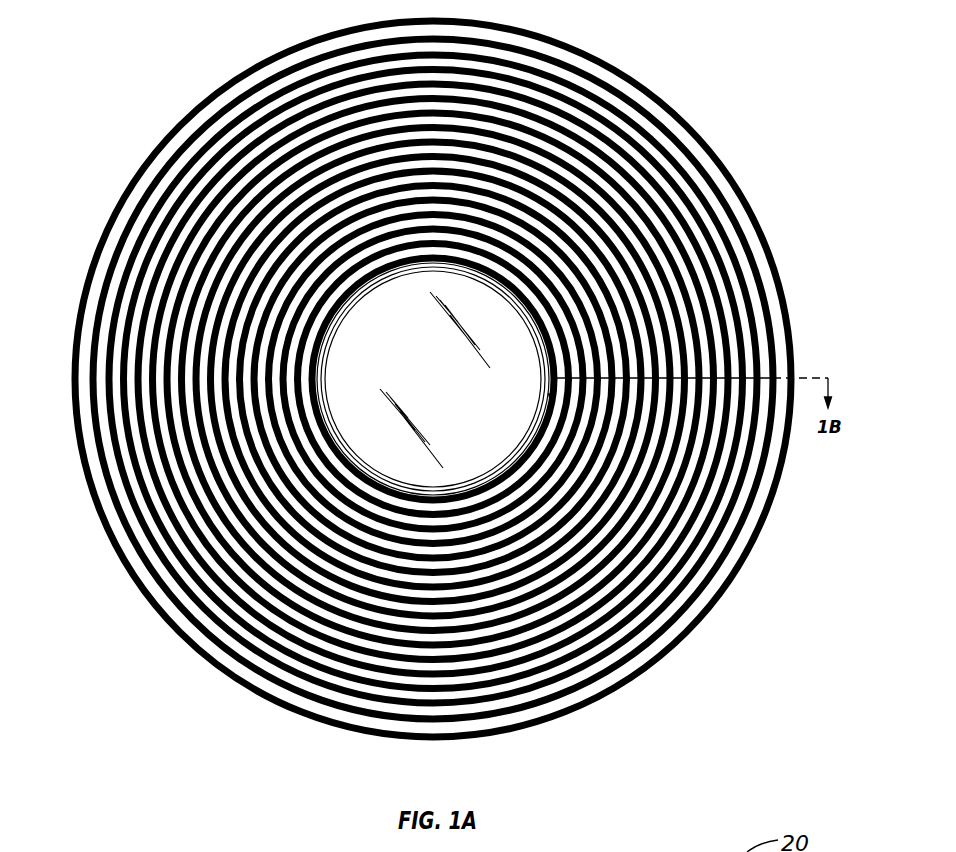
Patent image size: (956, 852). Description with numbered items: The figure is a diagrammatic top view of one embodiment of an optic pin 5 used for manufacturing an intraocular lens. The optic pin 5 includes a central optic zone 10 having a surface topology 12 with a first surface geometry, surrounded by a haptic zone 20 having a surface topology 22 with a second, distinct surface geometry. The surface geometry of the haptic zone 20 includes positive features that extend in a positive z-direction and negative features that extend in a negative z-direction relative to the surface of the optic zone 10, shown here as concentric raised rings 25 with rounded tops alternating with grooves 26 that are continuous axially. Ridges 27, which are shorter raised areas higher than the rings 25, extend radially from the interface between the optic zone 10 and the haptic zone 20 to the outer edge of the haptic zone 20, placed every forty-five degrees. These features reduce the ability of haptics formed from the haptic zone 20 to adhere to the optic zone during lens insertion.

The optic pin 5 is at (457, 377).
The optic zone 10 is at (503, 326).
The surface topology 12 is at (396, 347).
The haptic zone 20 is at (695, 238).
The surface topology 22 is at (548, 129).
The raised ring 25 is at (718, 283).
The groove 26 is at (755, 482).
The ridge 27 is at (693, 368).